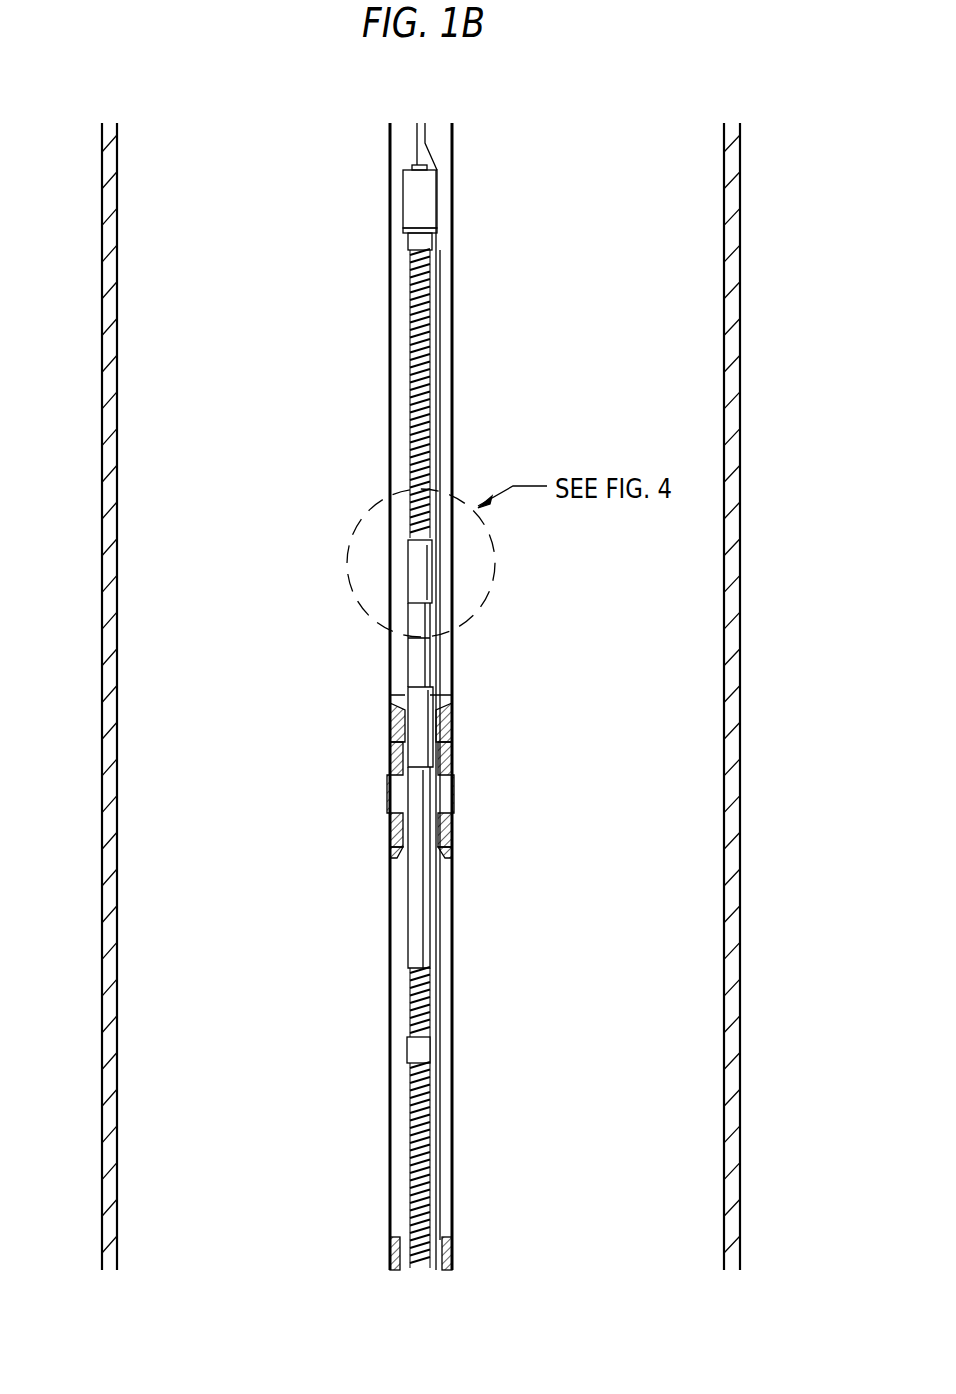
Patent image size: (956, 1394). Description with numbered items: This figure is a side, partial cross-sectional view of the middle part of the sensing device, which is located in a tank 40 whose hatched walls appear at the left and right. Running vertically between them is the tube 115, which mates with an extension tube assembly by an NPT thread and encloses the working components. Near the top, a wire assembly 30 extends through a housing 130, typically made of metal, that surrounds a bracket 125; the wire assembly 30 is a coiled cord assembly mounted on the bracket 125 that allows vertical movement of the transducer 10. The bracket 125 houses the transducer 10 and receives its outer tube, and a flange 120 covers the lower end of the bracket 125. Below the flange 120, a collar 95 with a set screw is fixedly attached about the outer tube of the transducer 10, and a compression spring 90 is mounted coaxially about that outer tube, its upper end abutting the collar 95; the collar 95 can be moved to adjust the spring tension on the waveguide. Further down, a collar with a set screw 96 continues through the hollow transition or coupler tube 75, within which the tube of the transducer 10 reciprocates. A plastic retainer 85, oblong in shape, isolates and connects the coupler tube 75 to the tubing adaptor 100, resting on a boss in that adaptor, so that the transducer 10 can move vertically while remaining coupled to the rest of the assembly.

The transducer 10 is at (427, 335).
The wire assembly 30 is at (428, 142).
The tank 40 is at (740, 283).
The transition tube 75 is at (423, 793).
The plastic retainer 85 is at (453, 728).
The compression spring 90 is at (427, 380).
The collar 95 is at (432, 242).
The collar with a set screw 96 is at (423, 695).
The tubing adaptor 100 is at (450, 762).
The tube 115 is at (453, 423).
The flange 120 is at (437, 229).
The bracket 125 is at (425, 207).
The housing 130 is at (437, 180).